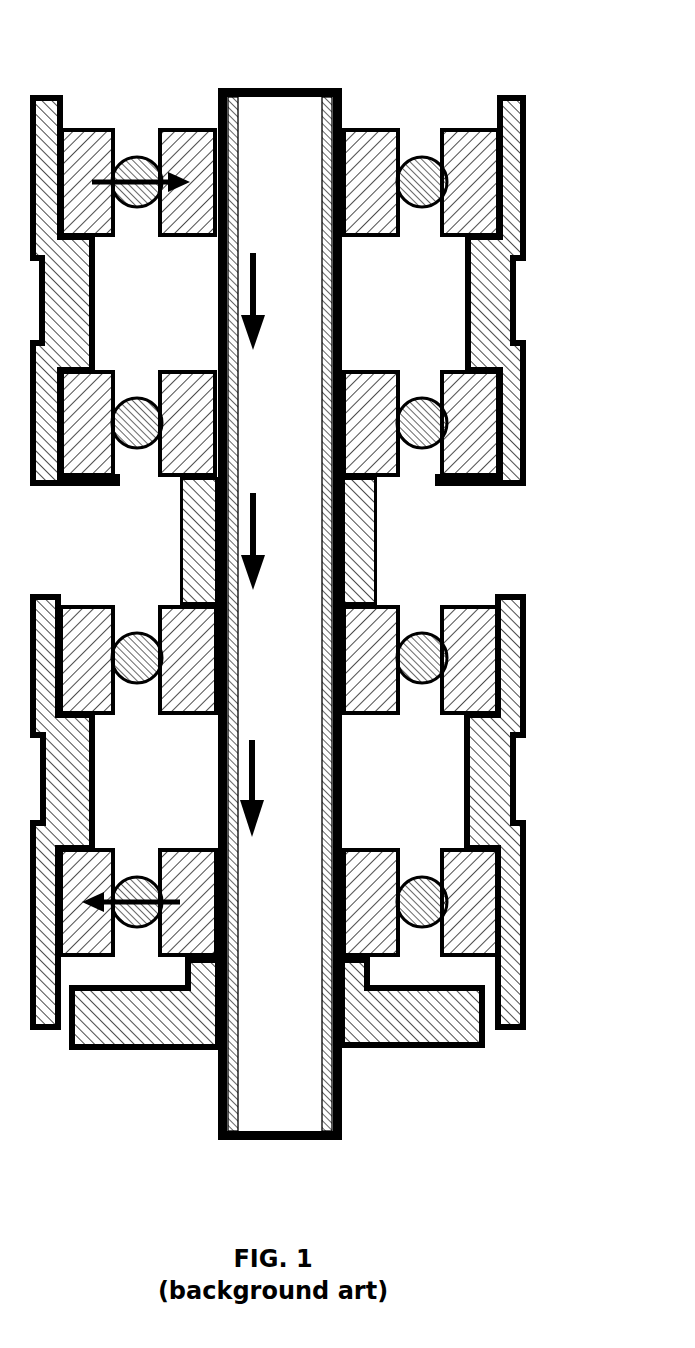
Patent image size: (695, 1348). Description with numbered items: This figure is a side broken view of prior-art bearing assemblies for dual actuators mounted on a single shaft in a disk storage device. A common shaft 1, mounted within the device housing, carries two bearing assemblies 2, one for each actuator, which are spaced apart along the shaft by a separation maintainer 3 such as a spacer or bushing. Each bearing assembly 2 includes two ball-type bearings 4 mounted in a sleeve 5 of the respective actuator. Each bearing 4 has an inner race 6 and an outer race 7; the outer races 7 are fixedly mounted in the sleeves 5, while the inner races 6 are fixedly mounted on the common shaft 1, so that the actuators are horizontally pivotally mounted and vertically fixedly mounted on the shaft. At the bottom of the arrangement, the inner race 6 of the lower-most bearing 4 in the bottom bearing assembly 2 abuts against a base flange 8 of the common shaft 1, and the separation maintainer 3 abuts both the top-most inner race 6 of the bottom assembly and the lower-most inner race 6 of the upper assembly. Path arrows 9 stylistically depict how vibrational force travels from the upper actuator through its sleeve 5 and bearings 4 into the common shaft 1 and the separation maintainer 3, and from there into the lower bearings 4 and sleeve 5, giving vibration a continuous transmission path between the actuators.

The common shaft 1 is at (315, 88).
The bearing assembly 2 is at (565, 312).
The separation maintainer 3 is at (358, 542).
The bearing 4 is at (485, 163).
The sleeve 5 is at (510, 245).
The inner race 6 is at (365, 150).
The outer race 7 is at (488, 448).
The base flange 8 is at (417, 1040).
The path arrows 9 is at (145, 163).